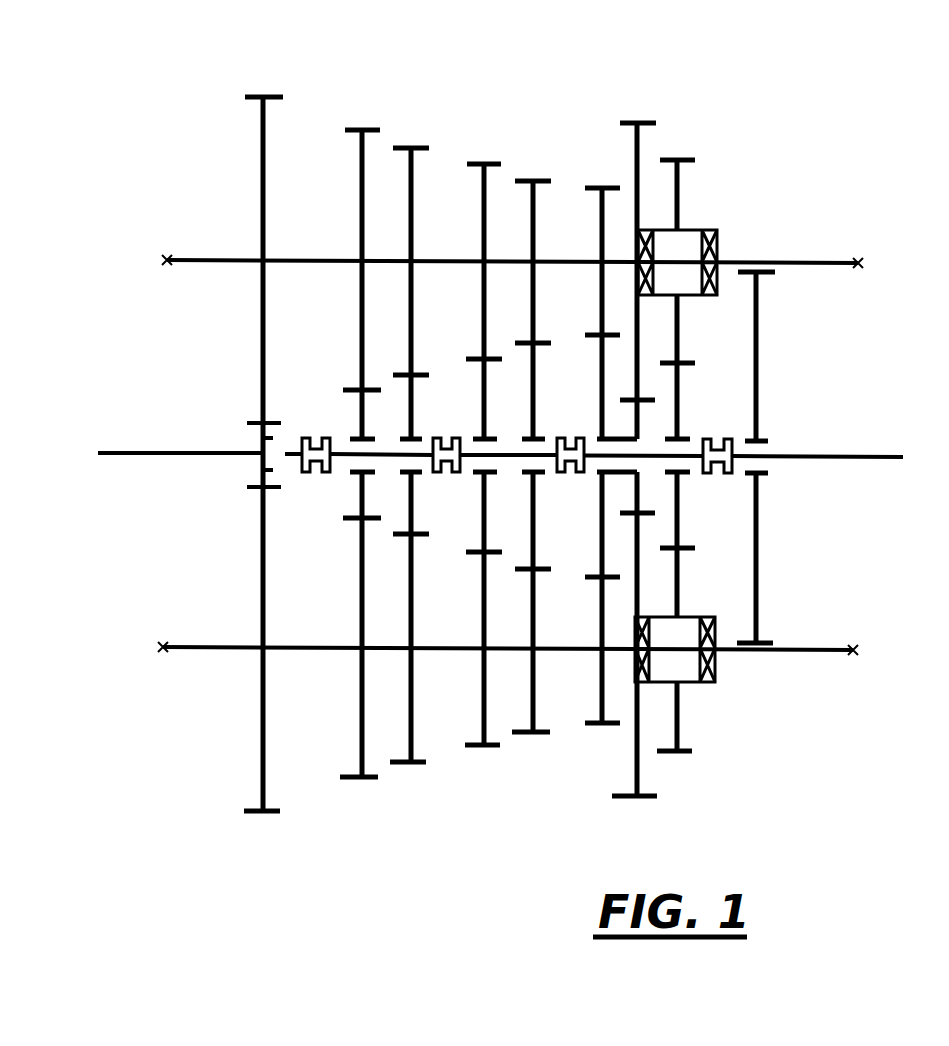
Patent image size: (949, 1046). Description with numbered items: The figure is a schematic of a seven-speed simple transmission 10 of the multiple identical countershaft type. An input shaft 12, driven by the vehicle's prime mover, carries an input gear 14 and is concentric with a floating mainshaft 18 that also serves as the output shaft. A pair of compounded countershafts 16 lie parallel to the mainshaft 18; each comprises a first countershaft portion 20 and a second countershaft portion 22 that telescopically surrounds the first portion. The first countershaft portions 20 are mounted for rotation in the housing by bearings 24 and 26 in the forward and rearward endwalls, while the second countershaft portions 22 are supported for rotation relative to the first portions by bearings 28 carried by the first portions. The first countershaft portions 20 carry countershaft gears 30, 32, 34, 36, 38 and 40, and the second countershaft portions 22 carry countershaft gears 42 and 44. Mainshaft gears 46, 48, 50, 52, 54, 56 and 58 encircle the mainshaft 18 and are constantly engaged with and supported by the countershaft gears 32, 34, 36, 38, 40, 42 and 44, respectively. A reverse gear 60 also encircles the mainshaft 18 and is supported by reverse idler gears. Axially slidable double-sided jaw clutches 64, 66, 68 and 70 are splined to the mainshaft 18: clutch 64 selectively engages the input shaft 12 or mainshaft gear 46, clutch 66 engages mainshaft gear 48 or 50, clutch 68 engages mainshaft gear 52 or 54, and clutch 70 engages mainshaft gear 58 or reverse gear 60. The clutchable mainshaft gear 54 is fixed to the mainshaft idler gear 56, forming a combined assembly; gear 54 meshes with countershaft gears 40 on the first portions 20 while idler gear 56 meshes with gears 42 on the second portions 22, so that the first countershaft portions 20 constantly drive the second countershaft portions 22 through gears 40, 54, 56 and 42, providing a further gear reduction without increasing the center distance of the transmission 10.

The transmission 10 is at (502, 511).
The input shaft 12 is at (162, 450).
The input gear 14 is at (255, 463).
The compounded countershaft 16 is at (217, 265).
The mainshaft 18 is at (870, 460).
The first countershaft portion 20 is at (335, 652).
The second countershaft portion 22 is at (706, 691).
The bearing 24 is at (165, 640).
The bearing 26 is at (870, 660).
The bearing 28 is at (701, 683).
The countershaft gear 30 is at (235, 454).
The countershaft gear 32 is at (338, 453).
The countershaft gear 34 is at (428, 455).
The countershaft gear 36 is at (464, 454).
The countershaft gear 38 is at (522, 456).
The countershaft gear 40 is at (600, 318).
The countershaft gear 42 is at (629, 459).
The countershaft gear 44 is at (705, 455).
The mainshaft gear 46 is at (360, 503).
The mainshaft gear 48 is at (413, 420).
The mainshaft gear 50 is at (483, 520).
The mainshaft gear 52 is at (531, 550).
The clutchable mainshaft gear 54 is at (600, 535).
The mainshaft idler gear 56 is at (639, 437).
The mainshaft gear 58 is at (679, 418).
The reverse gear 60 is at (758, 393).
The sliding jaw clutch 64 is at (311, 480).
The sliding jaw clutch 66 is at (451, 479).
The sliding jaw clutch 68 is at (575, 479).
The sliding jaw clutch 70 is at (722, 480).